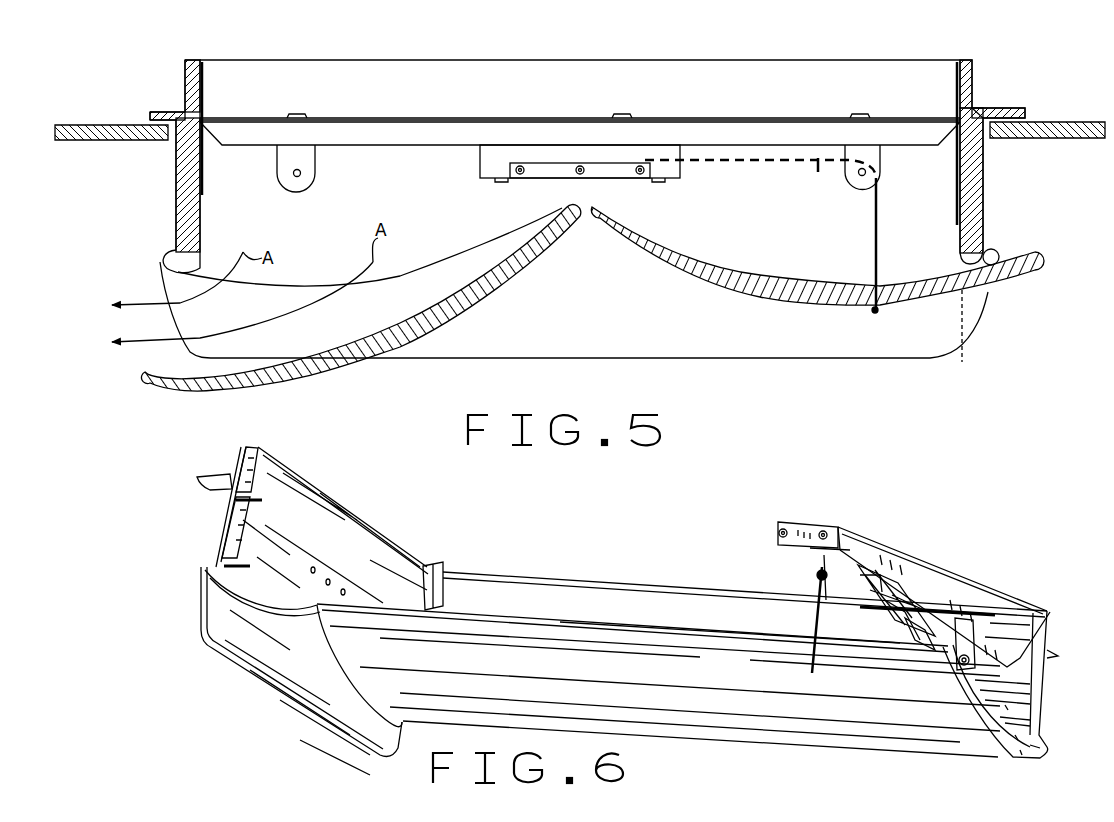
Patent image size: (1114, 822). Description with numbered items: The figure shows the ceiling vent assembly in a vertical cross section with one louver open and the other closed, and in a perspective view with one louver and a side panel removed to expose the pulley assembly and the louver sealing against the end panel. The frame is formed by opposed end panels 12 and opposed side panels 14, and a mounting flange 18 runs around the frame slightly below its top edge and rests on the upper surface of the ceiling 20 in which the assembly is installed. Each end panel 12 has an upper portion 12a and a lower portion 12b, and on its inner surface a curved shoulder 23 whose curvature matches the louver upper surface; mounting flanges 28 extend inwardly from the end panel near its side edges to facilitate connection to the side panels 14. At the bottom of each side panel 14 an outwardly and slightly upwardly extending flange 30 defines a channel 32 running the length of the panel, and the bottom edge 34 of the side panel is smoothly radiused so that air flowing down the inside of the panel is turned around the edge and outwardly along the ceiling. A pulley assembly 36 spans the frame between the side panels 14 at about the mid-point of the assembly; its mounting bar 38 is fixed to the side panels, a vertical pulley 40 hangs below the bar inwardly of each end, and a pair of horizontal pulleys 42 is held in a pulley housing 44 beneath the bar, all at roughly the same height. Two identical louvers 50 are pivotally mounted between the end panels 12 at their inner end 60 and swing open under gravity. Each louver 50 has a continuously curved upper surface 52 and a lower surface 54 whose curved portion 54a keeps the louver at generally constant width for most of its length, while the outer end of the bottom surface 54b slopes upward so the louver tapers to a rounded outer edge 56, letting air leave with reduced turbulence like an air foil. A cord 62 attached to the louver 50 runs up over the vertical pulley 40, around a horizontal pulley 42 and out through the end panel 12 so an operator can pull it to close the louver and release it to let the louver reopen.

In FIG. 5, the end panel 12 is at (525, 60).
In FIG. 6, the end panel 12 is at (322, 485).
In FIG. 6, the upper portion 12a is at (352, 532).
In FIG. 6, the lower portion 12b is at (298, 685).
In FIG. 5, the side panel 14 is at (188, 80).
In FIG. 6, the side panel 14 is at (558, 575).
In FIG. 5, the flange 18 is at (1000, 110).
In FIG. 6, the flange 18 is at (212, 478).
In FIG. 5, the ceiling 20 is at (1045, 123).
In FIG. 6, the shoulder 23 is at (222, 592).
In FIG. 6, the mounting flange 28 is at (262, 450).
In FIG. 5, the flange 30 is at (1000, 254).
In FIG. 5, the channel 32 is at (988, 248).
In FIG. 5, the bottom edge 34 is at (968, 338).
In FIG. 5, the pulley assembly 36 is at (713, 117).
In FIG. 6, the pulley assembly 36 is at (890, 556).
In FIG. 5, the mounting bar 38 is at (380, 118).
In FIG. 6, the mounting bar 38 is at (856, 527).
In FIG. 5, the vertical pulley 40 is at (300, 190).
In FIG. 6, the vertical pulley 40 is at (816, 578).
In FIG. 6, the horizontal pulley 42 is at (922, 638).
In FIG. 5, the pulley housing 44 is at (690, 160).
In FIG. 6, the pulley housing 44 is at (905, 602).
In FIG. 5, the louver 50 is at (480, 314).
In FIG. 6, the louver 50 is at (993, 760).
In FIG. 5, the upper surface 52 is at (745, 262).
In FIG. 5, the lower surface 54 is at (838, 312).
In FIG. 5, the curved portion 54a is at (697, 285).
In FIG. 5, the outer end of the bottom surface 54b is at (1027, 280).
In FIG. 5, the outer edge 56 is at (1045, 254).
In FIG. 5, the inner end 60 is at (582, 220).
In FIG. 5, the cord 62 is at (761, 235).
In FIG. 6, the cord 62 is at (982, 613).